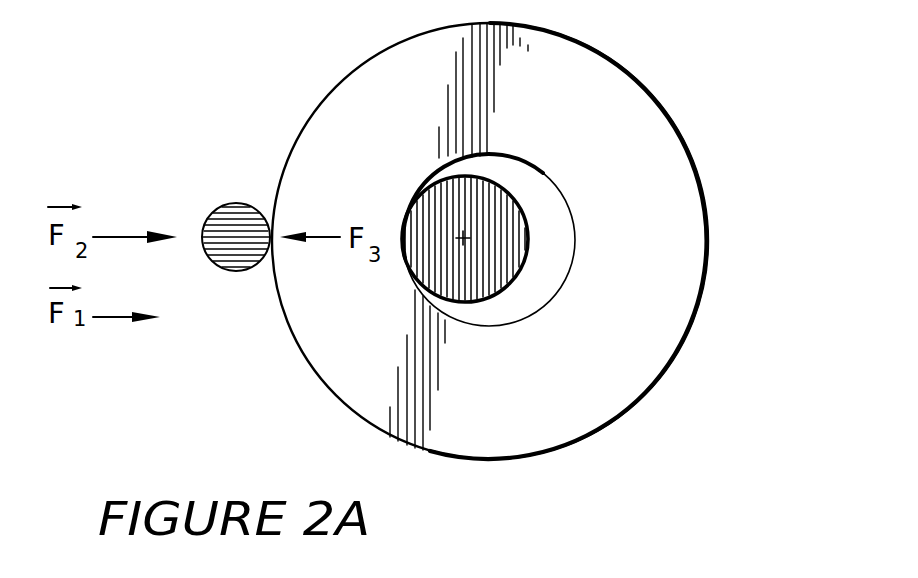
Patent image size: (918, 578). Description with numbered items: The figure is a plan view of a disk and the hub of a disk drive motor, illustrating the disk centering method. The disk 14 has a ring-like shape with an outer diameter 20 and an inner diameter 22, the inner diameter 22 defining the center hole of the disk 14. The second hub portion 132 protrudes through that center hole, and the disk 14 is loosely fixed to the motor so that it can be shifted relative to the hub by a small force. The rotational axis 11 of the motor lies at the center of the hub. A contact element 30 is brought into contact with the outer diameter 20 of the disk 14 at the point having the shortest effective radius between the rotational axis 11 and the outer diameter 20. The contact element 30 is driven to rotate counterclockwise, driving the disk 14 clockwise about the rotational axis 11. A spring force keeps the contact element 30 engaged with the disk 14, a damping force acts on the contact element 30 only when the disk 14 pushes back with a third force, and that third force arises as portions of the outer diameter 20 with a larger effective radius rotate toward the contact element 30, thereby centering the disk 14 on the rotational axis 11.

The rotational axis 11 is at (463, 239).
The second hub portion 132 is at (581, 194).
The disk 14 is at (644, 418).
The outer diameter 20 is at (308, 370).
The inner diameter 22 is at (470, 326).
The contact element 30 is at (233, 272).